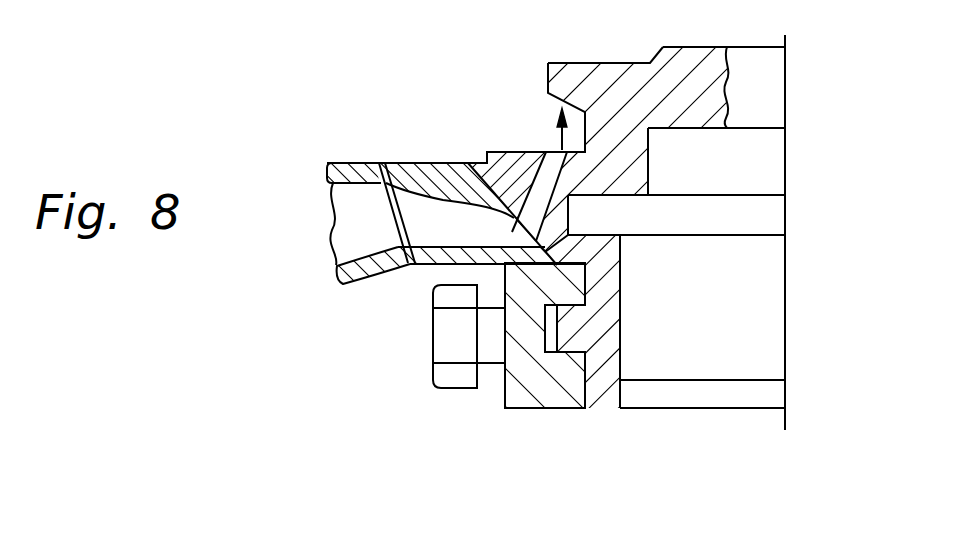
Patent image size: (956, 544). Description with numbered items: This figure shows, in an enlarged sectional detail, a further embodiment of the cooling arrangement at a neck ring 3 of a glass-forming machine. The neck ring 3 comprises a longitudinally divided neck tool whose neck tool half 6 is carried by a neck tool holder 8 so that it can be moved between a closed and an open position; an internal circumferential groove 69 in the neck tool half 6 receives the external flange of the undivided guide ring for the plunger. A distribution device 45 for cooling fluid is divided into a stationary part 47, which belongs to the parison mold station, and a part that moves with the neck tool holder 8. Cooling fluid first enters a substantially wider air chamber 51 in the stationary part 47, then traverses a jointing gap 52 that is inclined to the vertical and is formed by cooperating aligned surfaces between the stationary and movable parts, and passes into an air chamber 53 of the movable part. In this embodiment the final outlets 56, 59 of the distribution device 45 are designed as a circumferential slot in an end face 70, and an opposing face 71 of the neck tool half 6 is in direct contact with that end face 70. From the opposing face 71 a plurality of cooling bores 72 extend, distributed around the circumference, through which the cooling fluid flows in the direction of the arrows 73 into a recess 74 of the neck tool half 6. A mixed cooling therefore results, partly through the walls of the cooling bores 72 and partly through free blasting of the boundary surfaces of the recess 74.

The neck ring 3 is at (646, 424).
The neck tool half 6 is at (603, 408).
The neck tool holder 8 is at (522, 410).
The distribution device 45 is at (415, 279).
The stationary part 47 is at (350, 288).
The air chamber 51 is at (352, 197).
The jointing gap 52 is at (378, 163).
The air chamber 53 is at (410, 163).
The final outlet 56 is at (497, 200).
The final outlet 59 is at (497, 200).
The internal circumferential groove 69 is at (768, 214).
The end face 70 is at (485, 152).
The opposing face 71 is at (551, 238).
The cooling bore 72 is at (568, 209).
The arrow 73 is at (558, 146).
The recess 74 is at (548, 95).